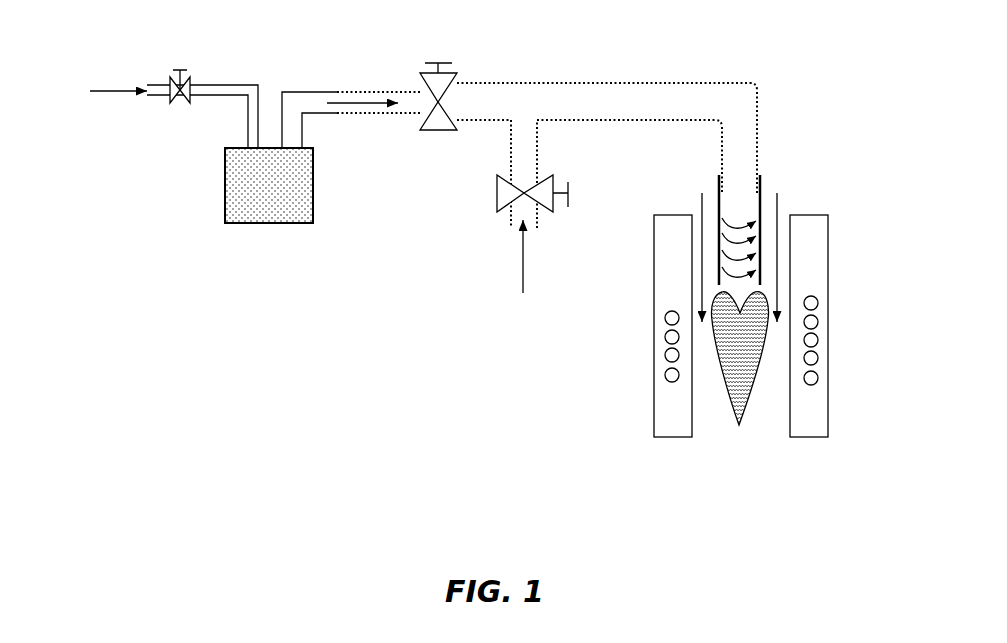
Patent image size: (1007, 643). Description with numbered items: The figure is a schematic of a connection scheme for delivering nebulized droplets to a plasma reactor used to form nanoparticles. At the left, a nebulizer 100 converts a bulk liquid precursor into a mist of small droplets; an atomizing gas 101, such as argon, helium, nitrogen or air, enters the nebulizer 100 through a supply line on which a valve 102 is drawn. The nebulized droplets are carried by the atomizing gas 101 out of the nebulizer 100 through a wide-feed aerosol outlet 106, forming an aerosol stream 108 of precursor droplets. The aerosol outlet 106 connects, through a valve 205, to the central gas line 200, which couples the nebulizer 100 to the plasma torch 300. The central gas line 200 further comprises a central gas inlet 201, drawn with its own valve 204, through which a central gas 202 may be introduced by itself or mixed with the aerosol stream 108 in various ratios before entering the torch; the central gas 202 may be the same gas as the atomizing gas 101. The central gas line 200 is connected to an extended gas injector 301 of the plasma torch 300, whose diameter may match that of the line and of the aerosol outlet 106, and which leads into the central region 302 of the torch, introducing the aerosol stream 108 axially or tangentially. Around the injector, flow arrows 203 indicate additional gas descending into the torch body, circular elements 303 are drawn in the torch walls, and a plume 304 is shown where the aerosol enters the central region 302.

The nebulizer 100 is at (265, 233).
The atomizing gas 101 is at (97, 93).
The valve 102 is at (168, 102).
The aerosol outlet 106 is at (305, 92).
The aerosol stream 108 is at (358, 102).
The central gas line 200 is at (632, 82).
The central gas inlet 201 is at (512, 138).
The central gas 202 is at (524, 271).
The outer gas flow 203 is at (702, 203).
The valve 204 is at (497, 185).
The valve 205 is at (457, 75).
The plasma torch 300 is at (728, 465).
The extended gas injector 301 is at (763, 185).
The central region 302 is at (743, 252).
The heater 303 is at (813, 322).
The deposition plume 304 is at (750, 370).